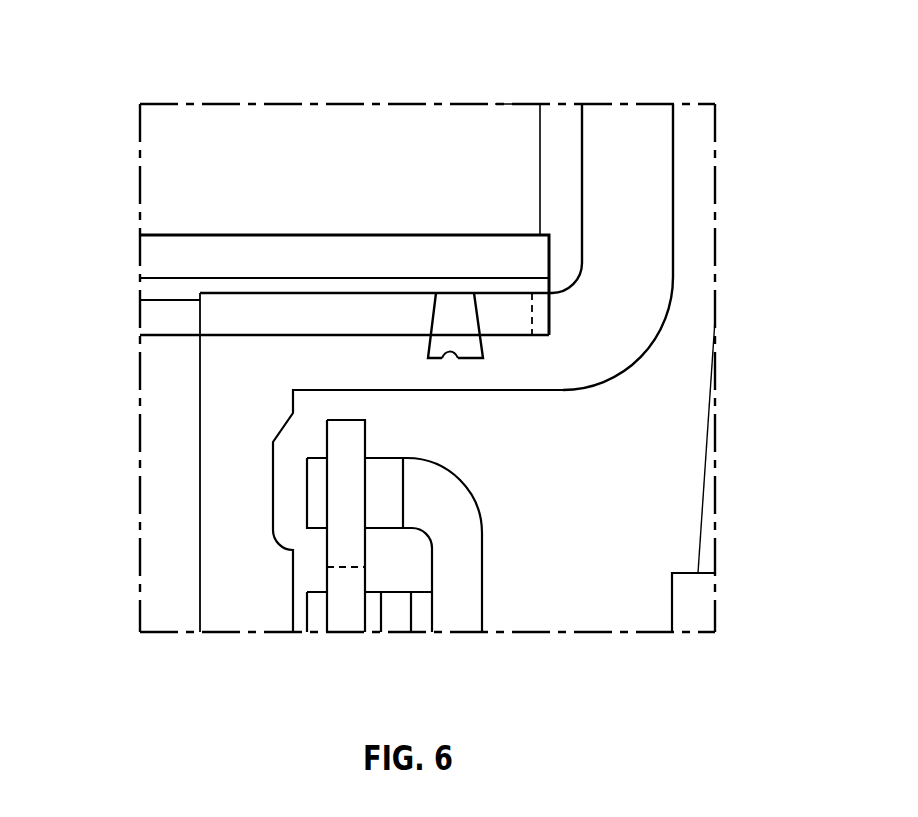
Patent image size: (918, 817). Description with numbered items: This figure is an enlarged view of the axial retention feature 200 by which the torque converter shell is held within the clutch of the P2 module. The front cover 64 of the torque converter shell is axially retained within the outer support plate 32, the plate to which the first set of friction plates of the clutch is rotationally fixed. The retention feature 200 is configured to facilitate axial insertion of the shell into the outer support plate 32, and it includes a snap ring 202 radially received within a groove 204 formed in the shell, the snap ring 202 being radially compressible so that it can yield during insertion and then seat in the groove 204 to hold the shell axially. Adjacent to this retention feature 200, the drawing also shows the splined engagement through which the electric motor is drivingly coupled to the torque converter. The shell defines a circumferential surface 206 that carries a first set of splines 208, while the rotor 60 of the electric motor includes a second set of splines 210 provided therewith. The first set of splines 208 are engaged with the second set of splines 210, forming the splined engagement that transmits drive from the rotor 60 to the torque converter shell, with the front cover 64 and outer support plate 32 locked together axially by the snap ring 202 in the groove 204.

The rotor 60 is at (418, 157).
The front cover 64 is at (642, 213).
The outer support plate 32 is at (155, 258).
The second set of splines 210 is at (497, 287).
The first set of splines 208 is at (252, 322).
The circumferential surface 206 is at (243, 332).
The retention feature 200 is at (553, 388).
The snap ring 202 is at (467, 340).
The groove 204 is at (458, 358).